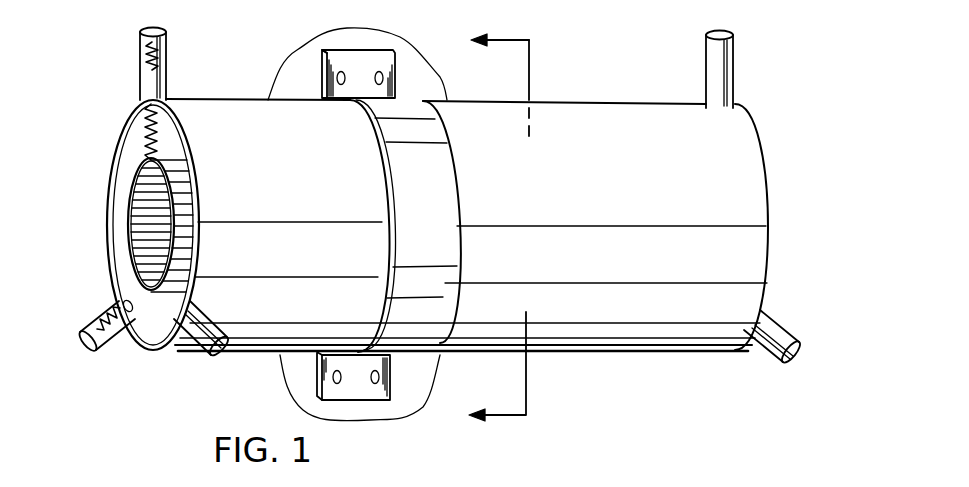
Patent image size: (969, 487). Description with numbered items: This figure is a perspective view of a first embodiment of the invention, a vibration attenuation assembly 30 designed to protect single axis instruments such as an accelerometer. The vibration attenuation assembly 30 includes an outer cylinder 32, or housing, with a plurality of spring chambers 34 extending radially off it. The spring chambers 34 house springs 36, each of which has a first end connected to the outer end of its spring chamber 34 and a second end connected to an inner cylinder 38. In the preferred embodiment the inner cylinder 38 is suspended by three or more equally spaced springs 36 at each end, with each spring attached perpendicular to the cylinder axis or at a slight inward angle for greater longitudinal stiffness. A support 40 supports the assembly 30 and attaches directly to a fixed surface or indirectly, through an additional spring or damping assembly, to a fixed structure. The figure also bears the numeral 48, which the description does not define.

The vibration attenuation assembly 30 is at (568, 84).
The outer cylinder 32 is at (631, 267).
The spring chambers 34 is at (140, 85).
The springs 36 is at (168, 48).
The inner cylinder 38 is at (183, 206).
The support 40 is at (369, 48).
The end ring 48 is at (127, 166).